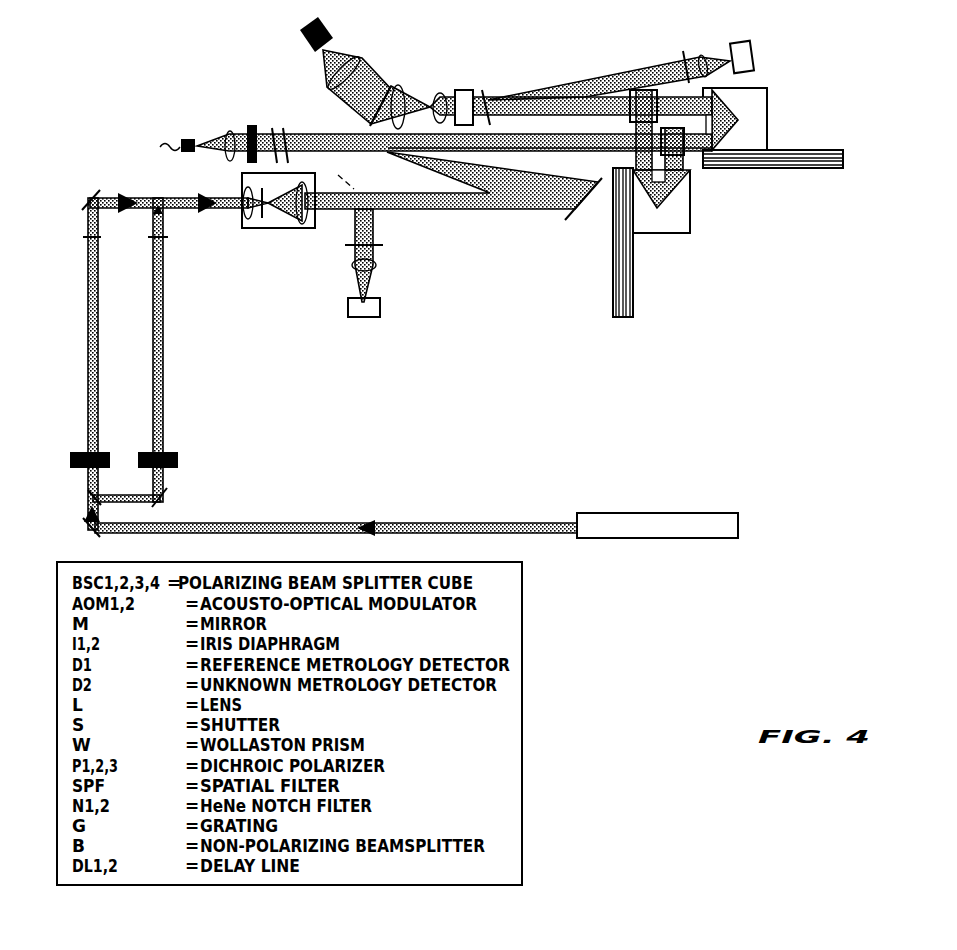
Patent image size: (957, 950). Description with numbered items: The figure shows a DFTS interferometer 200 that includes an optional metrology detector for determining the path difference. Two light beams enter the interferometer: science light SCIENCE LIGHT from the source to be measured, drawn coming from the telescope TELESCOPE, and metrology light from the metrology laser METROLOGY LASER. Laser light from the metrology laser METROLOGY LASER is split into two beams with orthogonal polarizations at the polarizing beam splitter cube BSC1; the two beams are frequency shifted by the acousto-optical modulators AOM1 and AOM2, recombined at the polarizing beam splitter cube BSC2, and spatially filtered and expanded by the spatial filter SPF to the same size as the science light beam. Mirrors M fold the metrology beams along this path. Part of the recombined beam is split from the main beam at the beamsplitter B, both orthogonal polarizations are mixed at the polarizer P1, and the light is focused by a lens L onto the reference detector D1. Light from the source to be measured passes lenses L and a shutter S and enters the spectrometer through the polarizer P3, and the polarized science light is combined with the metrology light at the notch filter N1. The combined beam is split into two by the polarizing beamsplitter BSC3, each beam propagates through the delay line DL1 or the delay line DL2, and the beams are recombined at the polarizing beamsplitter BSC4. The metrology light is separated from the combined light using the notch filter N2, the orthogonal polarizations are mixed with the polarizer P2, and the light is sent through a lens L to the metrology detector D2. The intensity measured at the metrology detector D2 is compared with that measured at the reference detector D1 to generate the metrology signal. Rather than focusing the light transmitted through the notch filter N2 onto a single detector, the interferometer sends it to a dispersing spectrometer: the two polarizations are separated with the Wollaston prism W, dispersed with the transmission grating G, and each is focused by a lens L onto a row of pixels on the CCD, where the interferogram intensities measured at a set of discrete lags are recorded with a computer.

The DFTS interferometer 200 is at (897, 81).
The telescope TELESCOPE is at (370, 147).
The science light SCIENCE LIGHT is at (209, 125).
The lens L is at (465, 155).
The shutter S is at (251, 131).
The polarizer P3 is at (276, 134).
The notch filter N1 is at (292, 124).
The element CCD is at (326, 70).
The transmission grating G is at (400, 91).
The Wollaston prism W is at (571, 98).
The notch filter N2 is at (495, 98).
The polarizer P2 is at (609, 60).
The metrology detector D2 is at (755, 57).
The polarizing beamsplitter BSC4 is at (640, 87).
The delay line DL2 is at (773, 128).
The polarizing beamsplitter BSC3 is at (687, 157).
The delay line DL1 is at (651, 242).
The spatial filter SPF is at (420, 200).
The beamsplitter B is at (382, 218).
The polarizer P1 is at (354, 248).
The reference detector D1 is at (364, 319).
The mirror M is at (336, 361).
The polarizing beam splitter cube BSC2 is at (162, 199).
The acousto-optical modulator AOM1 is at (65, 462).
The acousto-optical modulator AOM2 is at (184, 462).
The polarizing beam splitter cube BSC1 is at (87, 503).
The metrology laser METROLOGY LASER is at (416, 501).